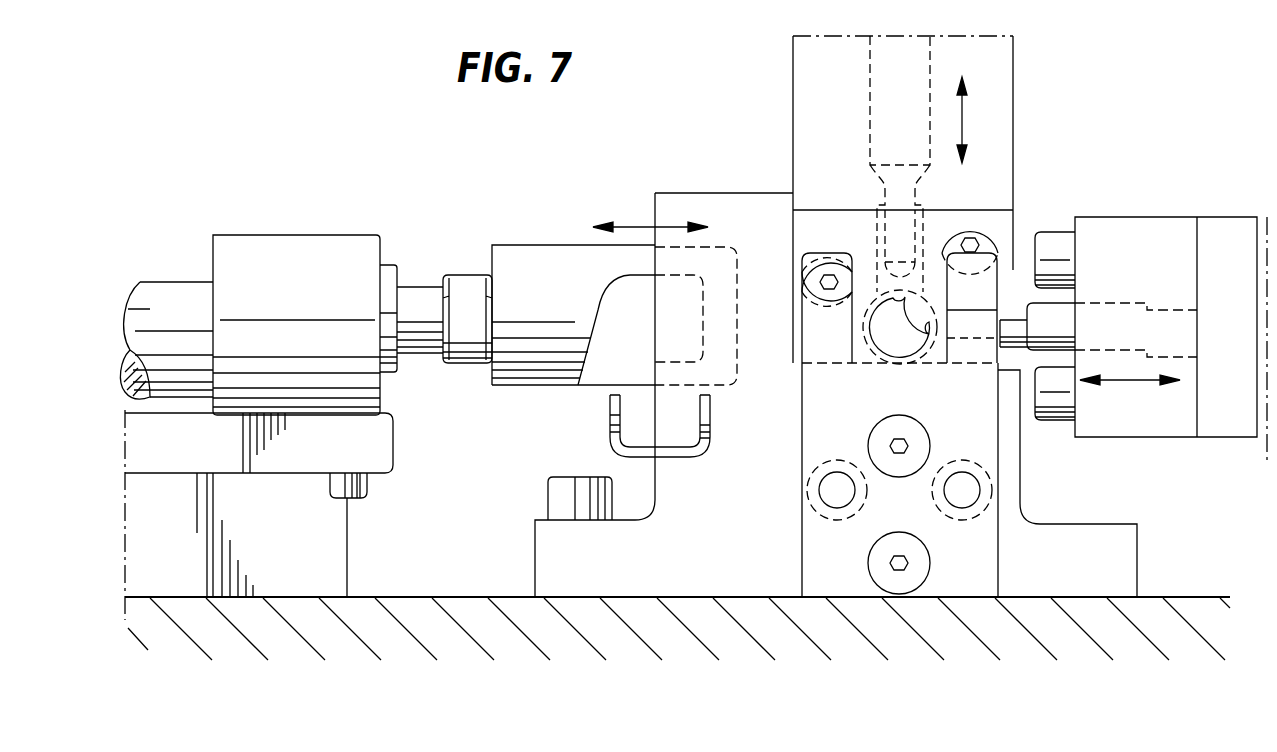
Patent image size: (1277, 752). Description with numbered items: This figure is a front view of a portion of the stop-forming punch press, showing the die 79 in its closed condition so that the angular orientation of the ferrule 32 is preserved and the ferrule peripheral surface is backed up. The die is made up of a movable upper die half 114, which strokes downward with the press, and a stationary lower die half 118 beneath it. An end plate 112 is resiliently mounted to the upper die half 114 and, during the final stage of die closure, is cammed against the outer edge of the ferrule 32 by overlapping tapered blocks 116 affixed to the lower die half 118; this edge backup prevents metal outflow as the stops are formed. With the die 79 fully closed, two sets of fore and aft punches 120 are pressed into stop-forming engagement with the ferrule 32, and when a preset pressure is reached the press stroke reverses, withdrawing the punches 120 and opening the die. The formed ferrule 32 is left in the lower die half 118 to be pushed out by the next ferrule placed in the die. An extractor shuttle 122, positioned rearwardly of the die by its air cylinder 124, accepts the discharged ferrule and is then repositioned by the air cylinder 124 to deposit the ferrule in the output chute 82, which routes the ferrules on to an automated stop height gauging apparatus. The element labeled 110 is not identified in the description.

The air cylinder 124 is at (150, 292).
The extractor shuttle 122 is at (538, 262).
The end plate 112 is at (806, 232).
The movable upper die half 114 is at (992, 110).
The fore and aft punches 120 is at (905, 246).
The ferrule 32 is at (935, 298).
The workpiece 110 is at (900, 340).
The overlapping tapered blocks 116 is at (815, 333).
The stationary lower die half 118 is at (820, 434).
The die 79 is at (805, 386).
The output chute 82 is at (612, 420).